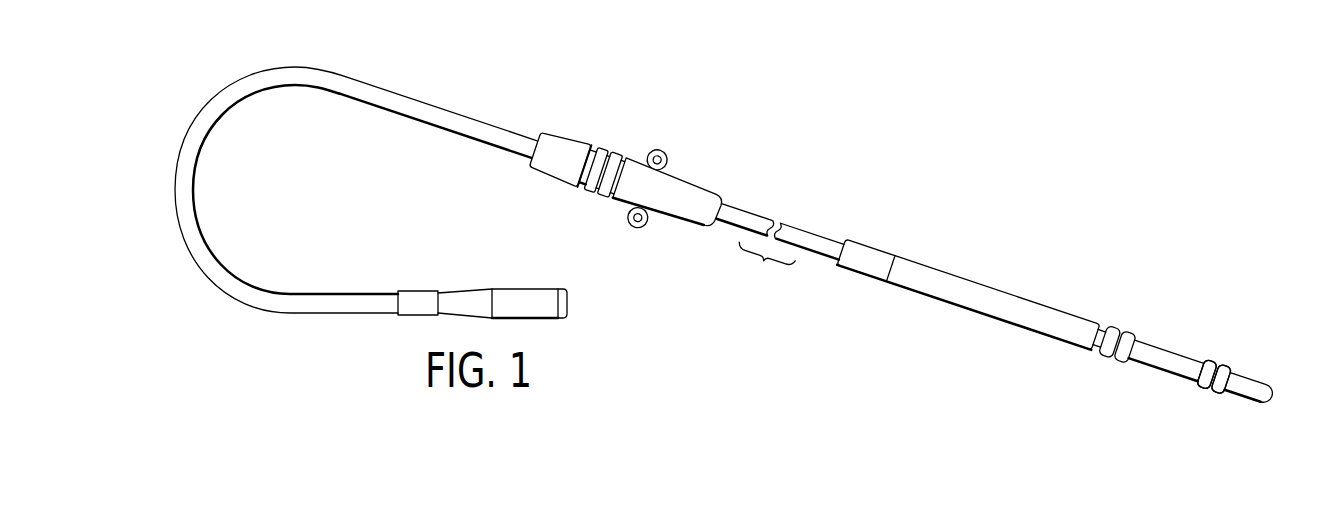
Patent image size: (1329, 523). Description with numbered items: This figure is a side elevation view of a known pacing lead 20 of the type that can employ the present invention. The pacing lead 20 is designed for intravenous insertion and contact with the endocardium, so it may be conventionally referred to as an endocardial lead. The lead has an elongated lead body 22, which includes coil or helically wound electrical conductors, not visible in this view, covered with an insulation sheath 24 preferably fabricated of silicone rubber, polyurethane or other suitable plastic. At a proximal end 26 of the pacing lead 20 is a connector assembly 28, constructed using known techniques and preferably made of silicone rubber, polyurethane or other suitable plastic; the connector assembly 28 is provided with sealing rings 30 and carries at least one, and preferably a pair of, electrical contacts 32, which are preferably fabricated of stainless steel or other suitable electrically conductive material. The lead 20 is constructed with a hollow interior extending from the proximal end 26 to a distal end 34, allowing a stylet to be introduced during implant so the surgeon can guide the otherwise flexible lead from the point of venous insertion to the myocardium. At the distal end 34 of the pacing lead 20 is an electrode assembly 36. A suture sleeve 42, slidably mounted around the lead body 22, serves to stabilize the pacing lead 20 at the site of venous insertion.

The pacing lead 20 is at (800, 197).
The lead body 22 is at (484, 109).
The insulation sheath 24 is at (523, 140).
The proximal end 26 is at (1242, 417).
The connector assembly 28 is at (1202, 385).
The sealing rings 30 is at (1131, 334).
The electrical contacts 32 is at (1250, 374).
The distal end 34 is at (567, 300).
The electrode assembly 36 is at (460, 272).
The suture sleeve 42 is at (702, 186).